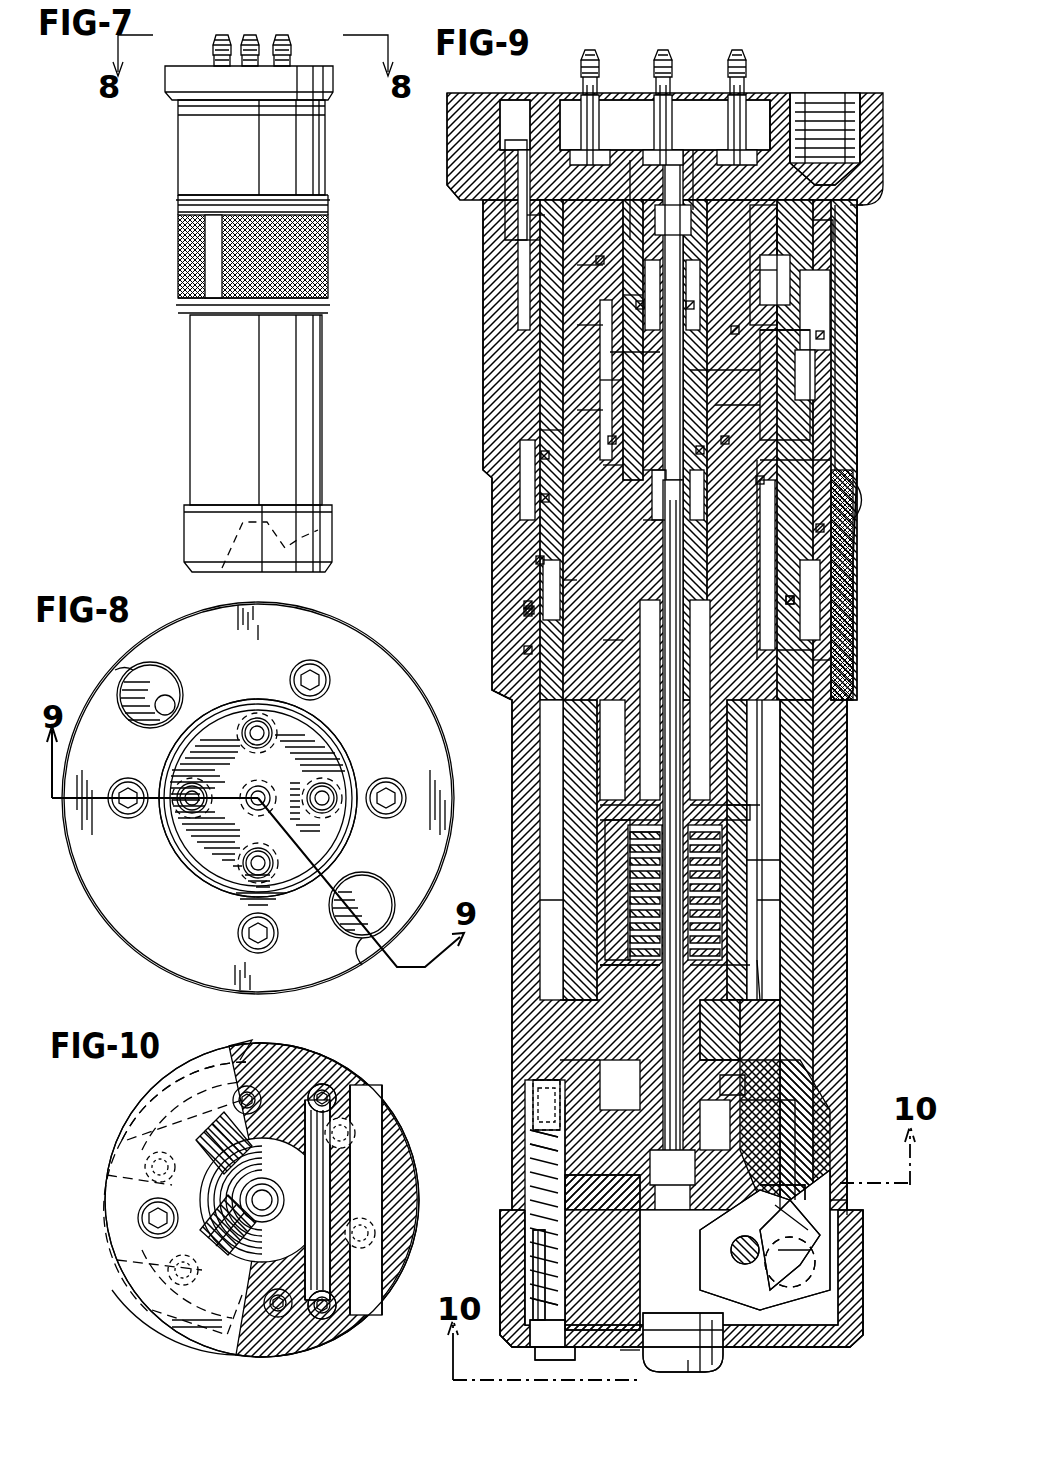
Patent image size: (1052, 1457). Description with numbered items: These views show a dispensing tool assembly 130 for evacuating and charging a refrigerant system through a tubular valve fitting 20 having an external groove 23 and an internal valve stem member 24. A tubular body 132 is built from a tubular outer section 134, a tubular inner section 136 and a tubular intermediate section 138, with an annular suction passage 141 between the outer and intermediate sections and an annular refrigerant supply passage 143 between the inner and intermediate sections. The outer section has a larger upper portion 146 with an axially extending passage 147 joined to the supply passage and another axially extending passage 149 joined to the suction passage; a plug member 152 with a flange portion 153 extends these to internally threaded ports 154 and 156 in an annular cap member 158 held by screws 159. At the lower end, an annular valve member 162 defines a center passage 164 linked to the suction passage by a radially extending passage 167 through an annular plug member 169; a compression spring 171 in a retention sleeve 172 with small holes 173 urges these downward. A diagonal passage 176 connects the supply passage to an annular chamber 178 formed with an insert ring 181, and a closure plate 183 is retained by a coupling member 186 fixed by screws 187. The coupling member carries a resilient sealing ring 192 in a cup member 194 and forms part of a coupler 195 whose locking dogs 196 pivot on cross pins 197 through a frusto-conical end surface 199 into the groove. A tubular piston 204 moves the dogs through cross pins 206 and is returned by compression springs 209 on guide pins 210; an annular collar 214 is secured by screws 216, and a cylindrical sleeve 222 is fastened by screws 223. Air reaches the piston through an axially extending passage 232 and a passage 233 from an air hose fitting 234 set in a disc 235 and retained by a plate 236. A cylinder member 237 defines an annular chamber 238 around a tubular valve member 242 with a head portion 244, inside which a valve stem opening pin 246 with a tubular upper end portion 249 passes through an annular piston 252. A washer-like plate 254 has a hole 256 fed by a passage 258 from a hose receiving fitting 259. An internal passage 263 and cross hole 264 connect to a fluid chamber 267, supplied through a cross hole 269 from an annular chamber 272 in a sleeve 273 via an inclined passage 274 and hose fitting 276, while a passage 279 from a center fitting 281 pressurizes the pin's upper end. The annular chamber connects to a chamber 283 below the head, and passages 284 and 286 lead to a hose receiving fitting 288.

In FIG. 10, the tubular valve fitting 20 is at (240, 1205).
In FIG. 9, the tubular valve fitting 20 is at (690, 1352).
In FIG. 9, the external groove 23 is at (625, 1350).
In FIG. 10, the valve stem member 24 is at (200, 1142).
In FIG. 7, the dispensing tool assembly 130 is at (160, 183).
In FIG. 9, the tubular body 132 is at (838, 749).
In FIG. 9, the tubular outer section 134 is at (790, 830).
In FIG. 9, the tubular inner section 136 is at (800, 662).
In FIG. 9, the tubular intermediate section 138 is at (822, 690).
In FIG. 9, the annular suction passage 141 is at (790, 890).
In FIG. 9, the annular refrigerant supply passage 143 is at (765, 868).
In FIG. 7, the upper portion 146 is at (318, 160).
In FIG. 9, the upper portion 146 is at (840, 355).
In FIG. 8, the axially extending passage 147 is at (345, 910).
In FIG. 9, the axially extending passage 147 is at (845, 190).
In FIG. 8, the axially extending passage 149 is at (165, 705).
In FIG. 9, the axially extending passage 149 is at (550, 432).
In FIG. 9, the plug member 152 is at (812, 318).
In FIG. 7, the flange portion 153 is at (312, 110).
In FIG. 9, the flange portion 153 is at (855, 210).
In FIG. 8, the internally threaded port 154 is at (365, 950).
In FIG. 9, the internally threaded port 154 is at (855, 95).
In FIG. 8, the internally threaded port 156 is at (115, 670).
In FIG. 7, the annular cap member 158 is at (200, 85).
In FIG. 8, the annular cap member 158 is at (330, 615).
In FIG. 9, the annular cap member 158 is at (450, 140).
In FIG. 8, the screws 159 is at (370, 700).
In FIG. 9, the screws 159 is at (505, 175).
In FIG. 9, the annular valve member 162 is at (745, 1065).
In FIG. 9, the center passage 164 is at (770, 1030).
In FIG. 9, the radially extending passage 167 is at (560, 1040).
In FIG. 9, the annular plug member 169 is at (600, 970).
In FIG. 9, the compression spring 171 is at (630, 845).
In FIG. 9, the retention sleeve 172 is at (615, 870).
In FIG. 9, the small holes 173 is at (745, 815).
In FIG. 9, the diagonal passage 176 is at (765, 1000).
In FIG. 9, the annular chamber 178 is at (748, 1085).
In FIG. 9, the insert ring 181 is at (535, 1112).
In FIG. 9, the closure plate 183 is at (535, 1140).
In FIG. 10, the coupling member 186 is at (305, 1270).
In FIG. 9, the coupling member 186 is at (580, 1200).
In FIG. 10, the screws 187 is at (252, 1085).
In FIG. 9, the screws 187 is at (800, 1108).
In FIG. 9, the resilient sealing ring 192 is at (565, 1170).
In FIG. 9, the cup member 194 is at (760, 1160).
In FIG. 9, the coupler 195 is at (820, 1262).
In FIG. 10, the locking dogs 196 is at (150, 1100).
In FIG. 9, the locking dogs 196 is at (790, 1290).
In FIG. 10, the cross pin 197 is at (330, 1170).
In FIG. 9, the cross pin 197 is at (745, 1265).
In FIG. 7, the frusto-conical end surface 199 is at (322, 528).
In FIG. 10, the frusto-conical end surface 199 is at (200, 1230).
In FIG. 9, the frusto-conical end surface 199 is at (545, 1285).
In FIG. 7, the tubular piston 204 is at (200, 365).
In FIG. 10, the tubular piston 204 is at (235, 1345).
In FIG. 9, the tubular piston 204 is at (510, 715).
In FIG. 10, the cross pins 206 is at (375, 1110).
In FIG. 9, the cross pins 206 is at (800, 1220).
In FIG. 10, the compression springs 209 is at (323, 1082).
In FIG. 9, the compression springs 209 is at (540, 1220).
In FIG. 9, the guide pins 210 is at (530, 1260).
In FIG. 7, the annular collar 214 is at (188, 538).
In FIG. 10, the annular collar 214 is at (125, 1150).
In FIG. 9, the annular collar 214 is at (850, 1280).
In FIG. 10, the screws 216 is at (138, 1218).
In FIG. 9, the screws 216 is at (535, 1355).
In FIG. 7, the cylindrical sleeve 222 is at (178, 245).
In FIG. 9, the cylindrical sleeve 222 is at (852, 575).
In FIG. 9, the screws 223 is at (862, 500).
In FIG. 9, the axially extending passage 232 is at (826, 335).
In FIG. 9, the passage 233 is at (760, 270).
In FIG. 8, the air hose fitting 234 is at (258, 720).
In FIG. 9, the disc 235 is at (770, 150).
In FIG. 8, the plate 236 is at (345, 828).
In FIG. 9, the plate 236 is at (693, 150).
In FIG. 9, the cylinder member 237 is at (524, 612).
In FIG. 9, the annular chamber 238 is at (580, 580).
In FIG. 9, the tubular valve member 242 is at (798, 605).
In FIG. 9, the head portion 244 is at (655, 528).
In FIG. 9, the valve stem opening pin 246 is at (600, 1060).
In FIG. 9, the tubular upper end portion 249 is at (612, 382).
In FIG. 9, the annular piston 252 is at (610, 468).
In FIG. 9, the washer-like plate 254 is at (740, 372).
In FIG. 9, the hole 256 is at (640, 355).
In FIG. 9, the passage 258 is at (590, 328).
In FIG. 8, the hose receiving fitting 259 is at (255, 850).
In FIG. 9, the internal passage 263 is at (740, 405).
In FIG. 9, the cross hole 264 is at (785, 470).
In FIG. 9, the fluid chamber 267 is at (645, 495).
In FIG. 9, the cross hole 269 is at (530, 243).
In FIG. 9, the annular chamber 272 is at (630, 298).
In FIG. 9, the sleeve 273 is at (590, 268).
In FIG. 9, the inclined passage 274 is at (815, 240).
In FIG. 7, the hose fitting 276 is at (285, 38).
In FIG. 8, the hose fitting 276 is at (328, 785).
In FIG. 9, the hose fitting 276 is at (737, 50).
In FIG. 9, the passage 279 is at (630, 160).
In FIG. 7, the center fitting 281 is at (268, 20).
In FIG. 8, the center fitting 281 is at (248, 785).
In FIG. 9, the center fitting 281 is at (665, 50).
In FIG. 9, the chamber 283 is at (615, 645).
In FIG. 9, the passage 284 is at (590, 412).
In FIG. 9, the passage 286 is at (540, 216).
In FIG. 7, the hose receiving fitting 288 is at (220, 35).
In FIG. 8, the hose receiving fitting 288 is at (180, 785).
In FIG. 9, the hose receiving fitting 288 is at (590, 50).